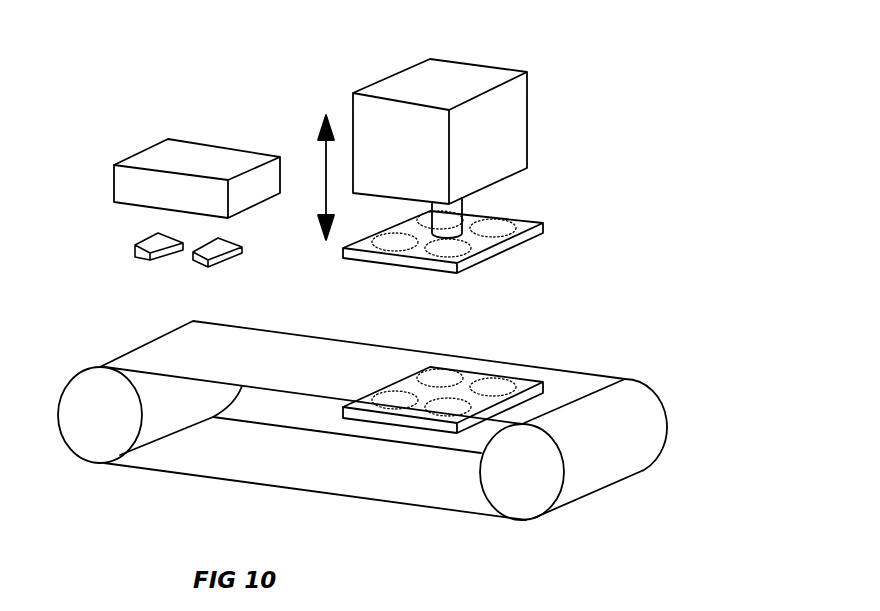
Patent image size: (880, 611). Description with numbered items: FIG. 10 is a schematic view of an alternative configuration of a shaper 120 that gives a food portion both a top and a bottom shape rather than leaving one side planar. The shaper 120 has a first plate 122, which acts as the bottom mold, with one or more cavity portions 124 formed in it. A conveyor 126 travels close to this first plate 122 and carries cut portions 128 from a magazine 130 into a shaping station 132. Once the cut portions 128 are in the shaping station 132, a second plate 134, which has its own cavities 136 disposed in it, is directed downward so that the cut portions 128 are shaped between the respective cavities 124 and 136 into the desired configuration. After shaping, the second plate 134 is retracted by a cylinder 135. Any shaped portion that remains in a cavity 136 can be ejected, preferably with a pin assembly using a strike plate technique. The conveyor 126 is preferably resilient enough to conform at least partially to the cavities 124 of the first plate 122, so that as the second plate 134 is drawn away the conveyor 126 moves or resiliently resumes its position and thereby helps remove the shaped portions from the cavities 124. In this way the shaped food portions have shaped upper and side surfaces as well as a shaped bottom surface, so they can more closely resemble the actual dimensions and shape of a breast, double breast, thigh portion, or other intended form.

The shaper 120 is at (662, 225).
The first plate 122 is at (440, 425).
The cavity portion 124 is at (442, 363).
The conveyor 126 is at (577, 383).
The cut portions 128 is at (138, 254).
The magazine 130 is at (197, 160).
The shaping station 132 is at (395, 315).
The second plate 134 is at (527, 225).
The cylinder 135 is at (513, 110).
The cavity 136 is at (388, 250).